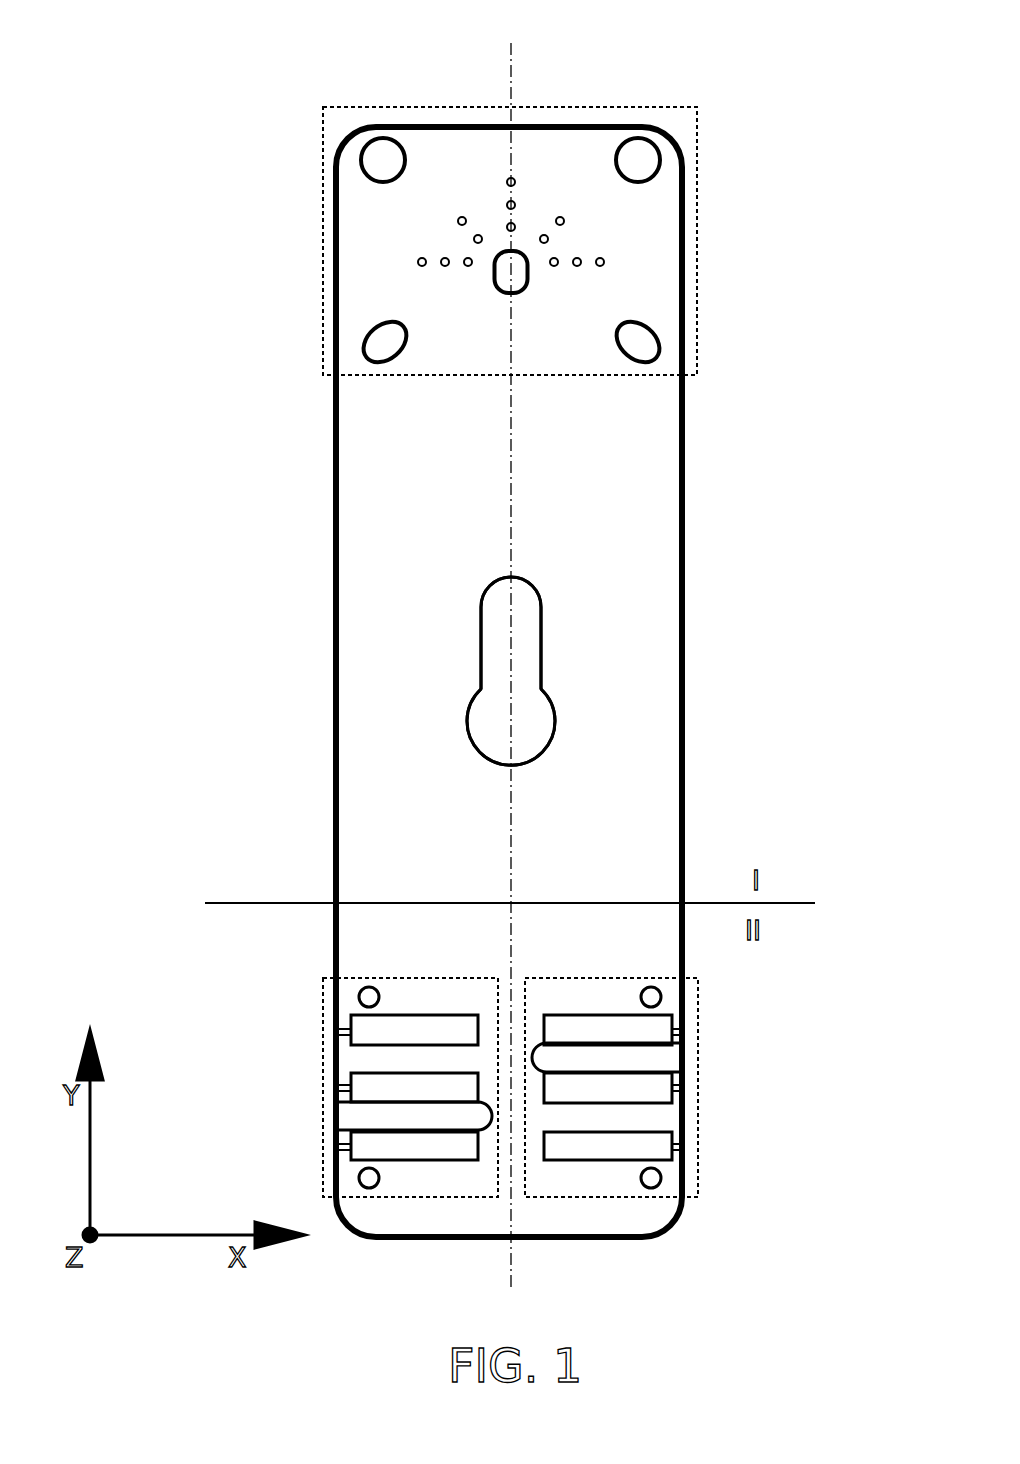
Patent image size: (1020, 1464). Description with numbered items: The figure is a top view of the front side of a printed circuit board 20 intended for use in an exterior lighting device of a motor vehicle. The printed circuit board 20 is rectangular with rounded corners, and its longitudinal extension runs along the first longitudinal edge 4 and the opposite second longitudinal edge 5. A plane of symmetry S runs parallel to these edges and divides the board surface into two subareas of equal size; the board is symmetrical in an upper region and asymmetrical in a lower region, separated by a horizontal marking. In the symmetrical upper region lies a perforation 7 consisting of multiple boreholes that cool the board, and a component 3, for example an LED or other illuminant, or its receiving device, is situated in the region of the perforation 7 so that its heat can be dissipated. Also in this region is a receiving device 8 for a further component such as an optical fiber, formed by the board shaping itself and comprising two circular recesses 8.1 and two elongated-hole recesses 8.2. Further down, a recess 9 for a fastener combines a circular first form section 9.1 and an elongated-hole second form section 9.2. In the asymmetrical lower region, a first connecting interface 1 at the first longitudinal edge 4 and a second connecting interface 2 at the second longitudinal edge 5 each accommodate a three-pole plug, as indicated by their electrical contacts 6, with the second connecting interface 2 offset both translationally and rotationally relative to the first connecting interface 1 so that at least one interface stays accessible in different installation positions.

The first connecting interface 1 is at (440, 1198).
The second connecting interface 2 is at (588, 1198).
The component 3 is at (515, 275).
The first longitudinal edge 4 is at (333, 803).
The second longitudinal edge 5 is at (684, 805).
The electrical contacts 6 is at (335, 1031).
The perforation 7 is at (458, 245).
The receiving device 8 is at (322, 363).
The circular recesses 8.1 is at (405, 150).
The elongated-hole recesses 8.2 is at (405, 352).
The recess 9 is at (527, 667).
The first form section 9.1 is at (537, 757).
The second form section 9.2 is at (542, 612).
The printed circuit board 20 is at (405, 92).
The plane of symmetry S is at (513, 60).